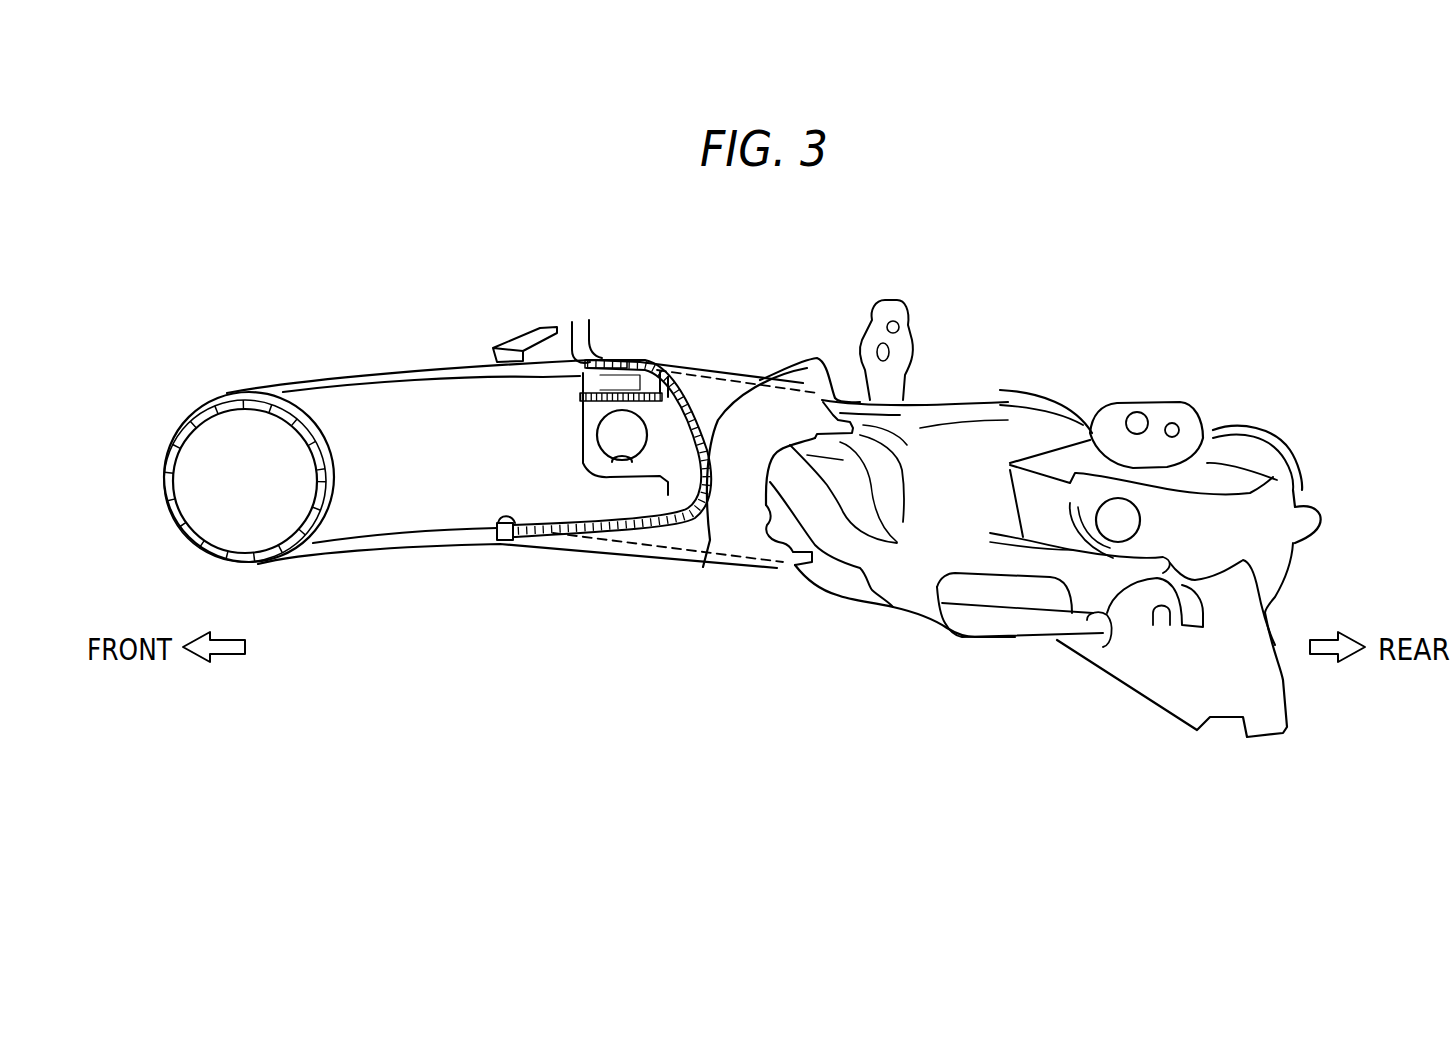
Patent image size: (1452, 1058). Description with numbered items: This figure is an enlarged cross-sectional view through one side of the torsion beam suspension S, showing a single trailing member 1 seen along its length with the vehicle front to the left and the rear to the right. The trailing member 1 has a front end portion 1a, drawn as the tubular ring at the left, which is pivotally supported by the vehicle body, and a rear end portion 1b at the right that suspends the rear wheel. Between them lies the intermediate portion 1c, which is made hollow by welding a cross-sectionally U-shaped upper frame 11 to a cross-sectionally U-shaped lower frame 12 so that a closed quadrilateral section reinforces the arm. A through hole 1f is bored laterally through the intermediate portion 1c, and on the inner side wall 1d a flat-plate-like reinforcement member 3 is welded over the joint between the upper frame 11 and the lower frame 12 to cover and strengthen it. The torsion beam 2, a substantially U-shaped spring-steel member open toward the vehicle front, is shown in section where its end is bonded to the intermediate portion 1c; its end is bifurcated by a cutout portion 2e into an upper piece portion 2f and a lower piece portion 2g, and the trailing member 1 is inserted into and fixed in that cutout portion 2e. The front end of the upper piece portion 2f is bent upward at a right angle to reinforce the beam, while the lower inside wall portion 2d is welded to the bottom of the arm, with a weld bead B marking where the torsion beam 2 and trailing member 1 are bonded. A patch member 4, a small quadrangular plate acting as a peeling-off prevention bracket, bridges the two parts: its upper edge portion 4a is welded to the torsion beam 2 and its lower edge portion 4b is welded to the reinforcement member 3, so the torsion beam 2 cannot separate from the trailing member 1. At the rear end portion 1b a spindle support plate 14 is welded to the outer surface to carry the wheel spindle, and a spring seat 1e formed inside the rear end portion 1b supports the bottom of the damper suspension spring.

The trailing member 1 is at (980, 362).
The front end portion 1a is at (238, 390).
The rear end portion 1b is at (1258, 425).
The intermediate portion 1c is at (428, 360).
The inner side wall 1d is at (407, 546).
The spring seat 1e is at (1100, 610).
The through hole 1f is at (637, 462).
The torsion beam 2 is at (587, 529).
The lower inside wall portion 2d is at (497, 541).
The cutout portion 2e is at (773, 562).
The upper piece portion 2f is at (587, 320).
The lower piece portion 2g is at (542, 541).
The reinforcement member 3 is at (366, 530).
The patch member 4 is at (617, 372).
The upper edge portion 4a is at (628, 372).
The lower edge portion 4b is at (650, 367).
The upper frame 11 is at (352, 374).
The lower frame 12 is at (325, 548).
The spindle support plate 14 is at (1158, 400).
The weld bead B is at (603, 366).
The torsion beam suspension S is at (948, 272).